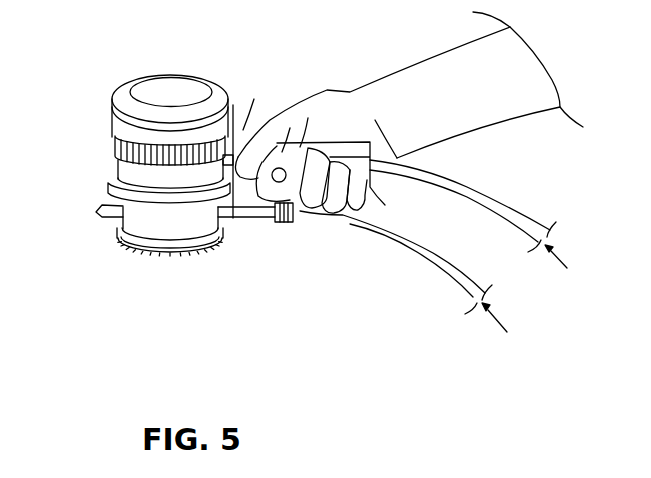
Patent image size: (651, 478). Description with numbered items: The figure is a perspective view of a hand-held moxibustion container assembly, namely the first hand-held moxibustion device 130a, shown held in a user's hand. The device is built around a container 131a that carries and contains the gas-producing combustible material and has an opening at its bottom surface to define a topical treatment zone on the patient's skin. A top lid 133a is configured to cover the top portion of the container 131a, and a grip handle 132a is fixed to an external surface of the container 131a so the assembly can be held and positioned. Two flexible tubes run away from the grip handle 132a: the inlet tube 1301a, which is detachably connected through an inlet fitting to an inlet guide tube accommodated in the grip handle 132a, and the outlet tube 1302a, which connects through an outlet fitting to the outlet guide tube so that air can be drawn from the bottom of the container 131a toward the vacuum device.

The first hand-held moxibustion device 130a is at (103, 64).
The container 131a is at (113, 160).
The grip handle 132a is at (235, 121).
The top lid 133a is at (113, 112).
The inlet tube 1301a is at (518, 212).
The outlet tube 1302a is at (390, 240).